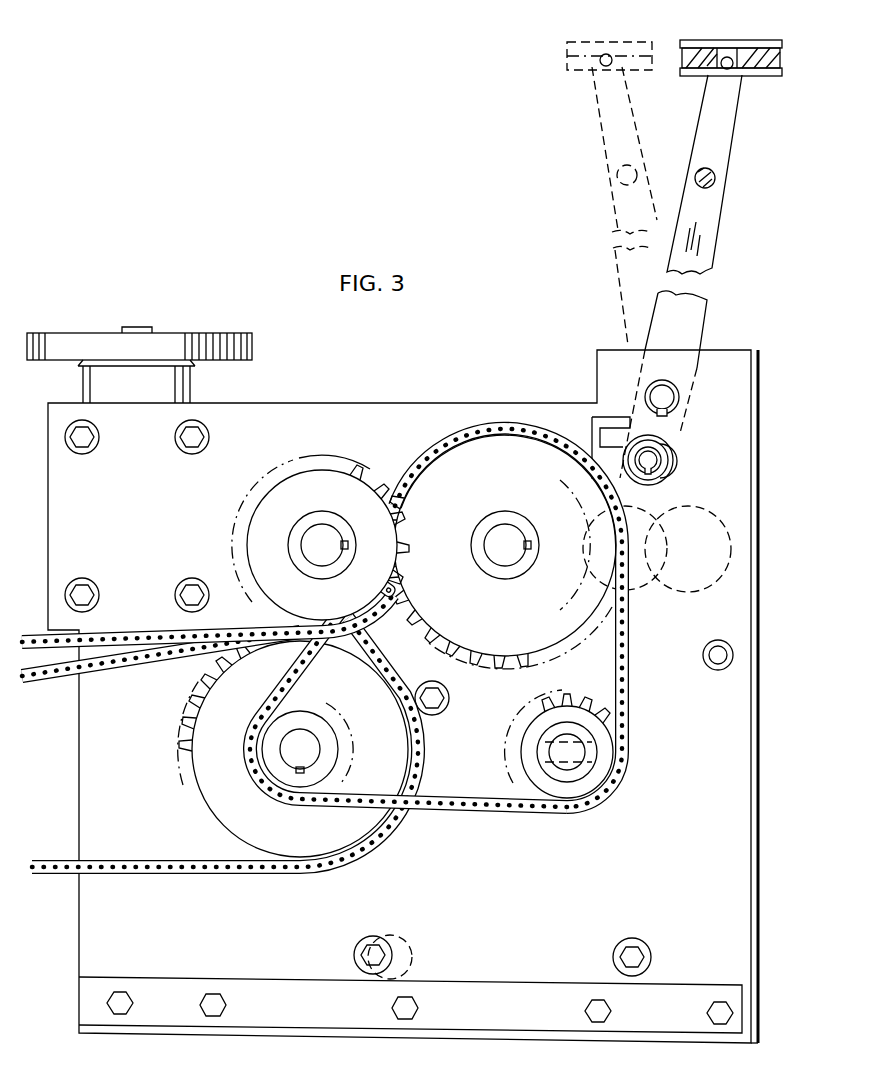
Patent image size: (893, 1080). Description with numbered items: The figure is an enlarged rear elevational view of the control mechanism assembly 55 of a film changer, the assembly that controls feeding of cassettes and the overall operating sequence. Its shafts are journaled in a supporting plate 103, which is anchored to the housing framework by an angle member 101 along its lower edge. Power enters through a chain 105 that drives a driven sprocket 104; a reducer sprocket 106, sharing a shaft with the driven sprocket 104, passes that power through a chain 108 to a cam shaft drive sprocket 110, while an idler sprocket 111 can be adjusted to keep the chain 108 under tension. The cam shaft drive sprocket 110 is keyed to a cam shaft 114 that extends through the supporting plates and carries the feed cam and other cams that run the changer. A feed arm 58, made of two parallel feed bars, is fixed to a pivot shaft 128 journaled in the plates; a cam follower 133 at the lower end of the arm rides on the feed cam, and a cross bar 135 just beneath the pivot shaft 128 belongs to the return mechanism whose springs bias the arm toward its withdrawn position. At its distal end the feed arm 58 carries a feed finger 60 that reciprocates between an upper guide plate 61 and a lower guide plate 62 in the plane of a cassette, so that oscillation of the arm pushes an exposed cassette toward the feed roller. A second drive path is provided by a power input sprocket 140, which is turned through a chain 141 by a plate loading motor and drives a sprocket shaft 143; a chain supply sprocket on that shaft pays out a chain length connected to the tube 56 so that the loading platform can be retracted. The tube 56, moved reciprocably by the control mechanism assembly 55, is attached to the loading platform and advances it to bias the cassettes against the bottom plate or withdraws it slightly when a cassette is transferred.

The control mechanism assembly 55 is at (255, 322).
The tube 56 is at (188, 380).
The feed arm 58 is at (735, 200).
The feed finger 60 is at (782, 56).
The upper guide plate 61 is at (740, 45).
The lower guide plate 62 is at (770, 76).
The angle member 101 is at (382, 1036).
The supporting plate 103 is at (736, 848).
The driven sprocket 104 is at (205, 788).
The chain 105 is at (185, 875).
The reducer sprocket 106 is at (333, 748).
The chain 108 is at (450, 806).
The cam shaft drive sprocket 110 is at (510, 650).
The idler sprocket 111 is at (522, 740).
The cam shaft 114 is at (506, 528).
The pivot shaft 128 is at (668, 397).
The cam follower 133 is at (648, 592).
The cross bar 135 is at (656, 460).
The power input sprocket 140 is at (310, 478).
The chain 141 is at (127, 636).
The sprocket shaft 143 is at (325, 528).